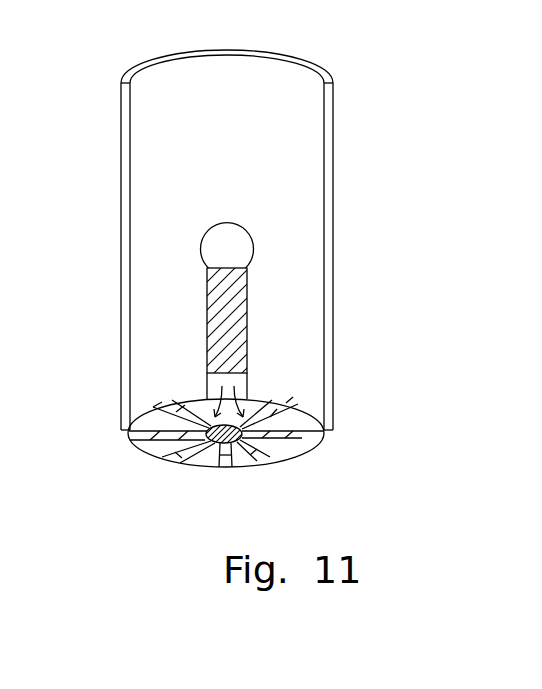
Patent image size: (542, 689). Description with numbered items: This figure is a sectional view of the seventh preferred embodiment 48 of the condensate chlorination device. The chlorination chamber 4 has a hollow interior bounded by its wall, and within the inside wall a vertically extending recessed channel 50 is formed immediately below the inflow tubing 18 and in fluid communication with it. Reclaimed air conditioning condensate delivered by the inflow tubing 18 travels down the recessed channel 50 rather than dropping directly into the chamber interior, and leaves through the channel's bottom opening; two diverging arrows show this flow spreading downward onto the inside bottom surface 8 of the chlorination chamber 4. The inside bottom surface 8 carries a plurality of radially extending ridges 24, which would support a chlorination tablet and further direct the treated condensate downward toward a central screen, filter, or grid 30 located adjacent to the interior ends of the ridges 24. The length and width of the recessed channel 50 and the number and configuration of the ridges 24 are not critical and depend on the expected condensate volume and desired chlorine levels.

The chlorination chamber 4 is at (333, 123).
The inside bottom surface 8 is at (271, 338).
The inflow tubing 18 is at (227, 250).
The ridges 24 is at (178, 455).
The screen, filter, or grid 30 is at (208, 430).
The seventh preferred embodiment 48 is at (442, 63).
The recessed channel 50 is at (227, 322).